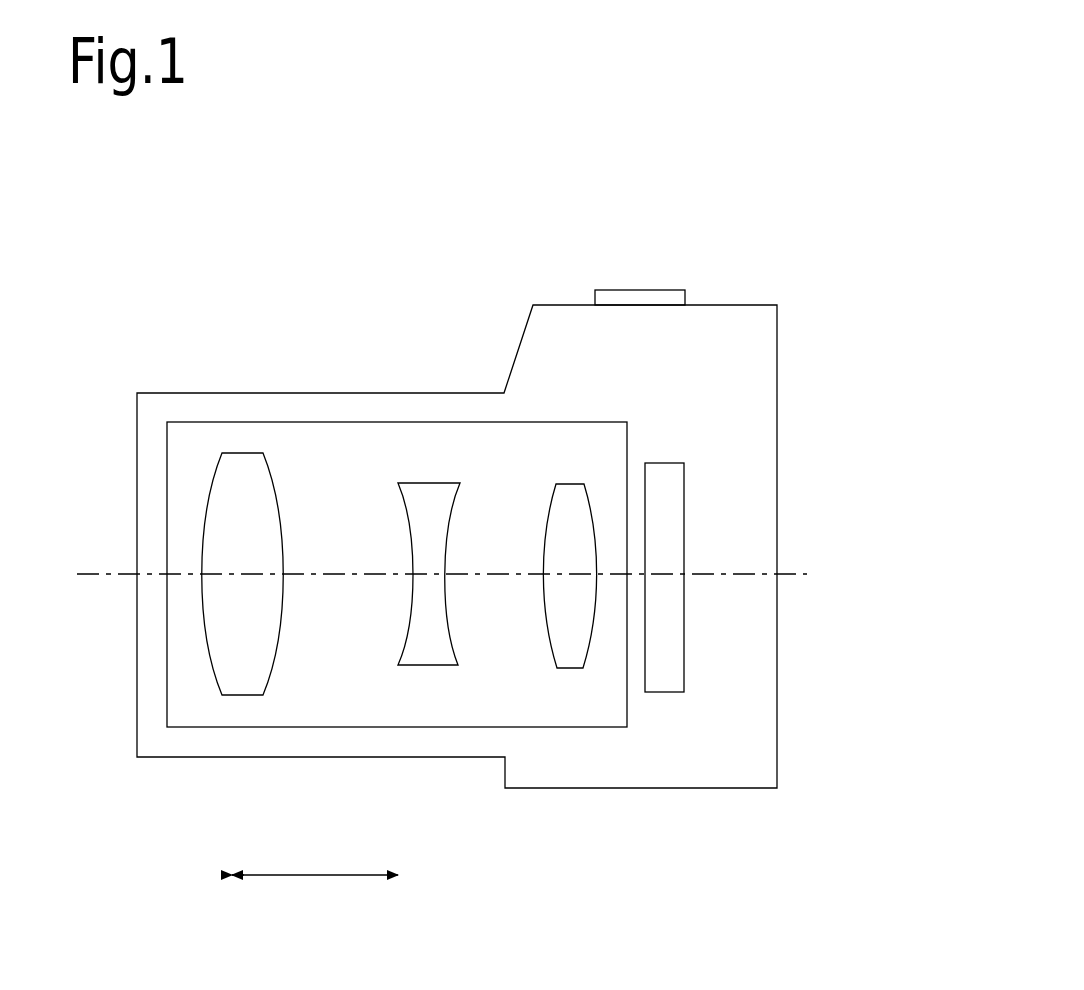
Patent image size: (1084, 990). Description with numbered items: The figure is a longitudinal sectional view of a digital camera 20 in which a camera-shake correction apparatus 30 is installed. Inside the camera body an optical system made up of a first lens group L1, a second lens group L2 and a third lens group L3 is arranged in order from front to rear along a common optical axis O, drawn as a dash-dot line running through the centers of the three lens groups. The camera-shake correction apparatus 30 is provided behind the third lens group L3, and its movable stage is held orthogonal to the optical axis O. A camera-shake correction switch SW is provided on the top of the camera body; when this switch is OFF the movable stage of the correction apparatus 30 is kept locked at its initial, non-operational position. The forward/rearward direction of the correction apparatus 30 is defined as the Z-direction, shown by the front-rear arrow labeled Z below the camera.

The digital camera 20 is at (822, 310).
The camera-shake correction apparatus 30 is at (668, 450).
The camera-shake correction switch SW is at (641, 298).
The optical axis O is at (718, 575).
The first lens group L1 is at (246, 498).
The second lens group L2 is at (430, 513).
The third lens group L3 is at (573, 510).
The Z-direction Z is at (313, 876).